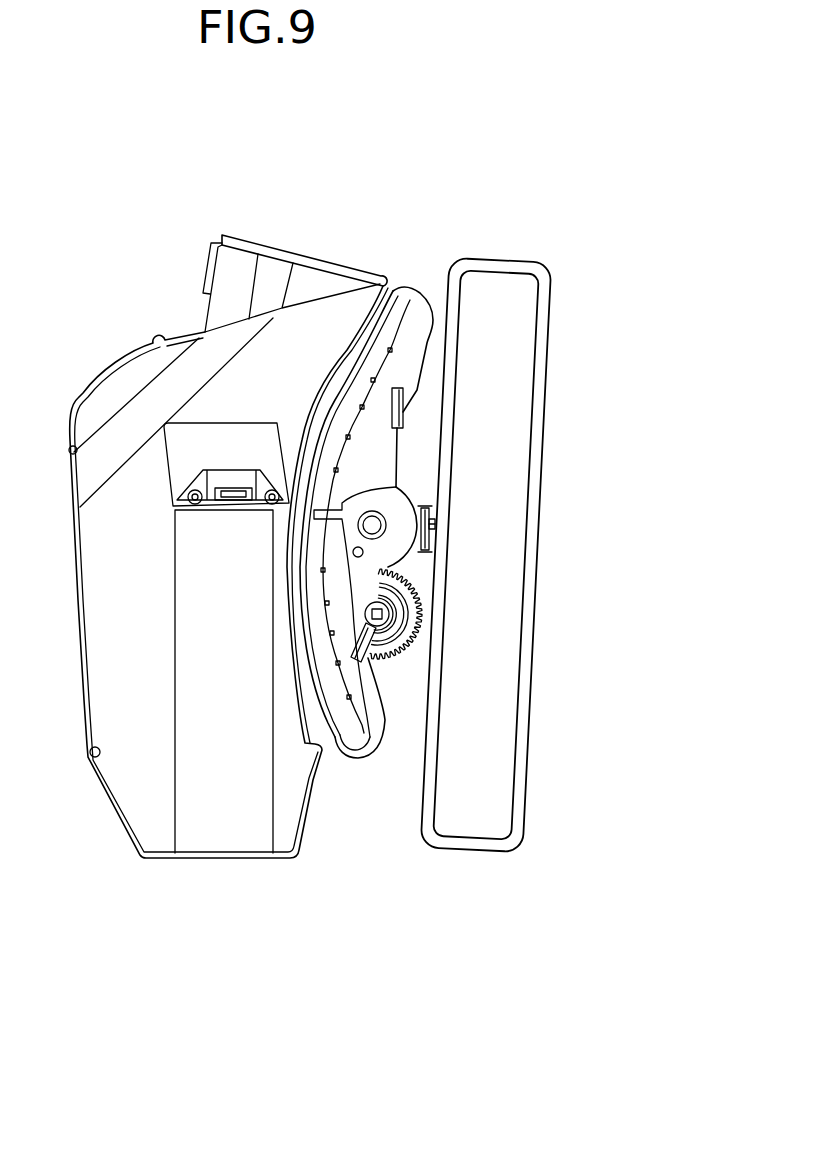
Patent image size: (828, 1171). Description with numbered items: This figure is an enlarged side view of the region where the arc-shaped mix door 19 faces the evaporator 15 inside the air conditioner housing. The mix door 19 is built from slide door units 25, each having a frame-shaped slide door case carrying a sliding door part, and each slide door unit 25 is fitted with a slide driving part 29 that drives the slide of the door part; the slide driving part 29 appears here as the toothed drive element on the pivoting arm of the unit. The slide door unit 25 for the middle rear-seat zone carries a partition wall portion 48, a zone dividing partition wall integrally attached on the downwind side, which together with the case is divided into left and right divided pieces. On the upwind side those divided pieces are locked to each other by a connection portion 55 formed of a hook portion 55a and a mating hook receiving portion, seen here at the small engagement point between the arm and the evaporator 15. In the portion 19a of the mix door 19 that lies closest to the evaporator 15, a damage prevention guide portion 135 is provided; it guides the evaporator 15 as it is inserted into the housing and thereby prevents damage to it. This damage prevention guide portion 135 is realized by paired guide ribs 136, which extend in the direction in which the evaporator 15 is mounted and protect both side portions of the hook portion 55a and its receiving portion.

The evaporator 15 is at (466, 856).
The mix door 19 is at (497, 509).
The portion of the mix door closest to the evaporator 19a is at (426, 480).
The slide door unit 25 is at (402, 262).
The slide driving part 29 is at (399, 666).
The partition wall portion 48 is at (312, 232).
The connection portion 55 is at (549, 521).
The hook portion 55a is at (432, 524).
The damage prevention guide portion 135 is at (543, 513).
The guide rib 136 is at (427, 508).